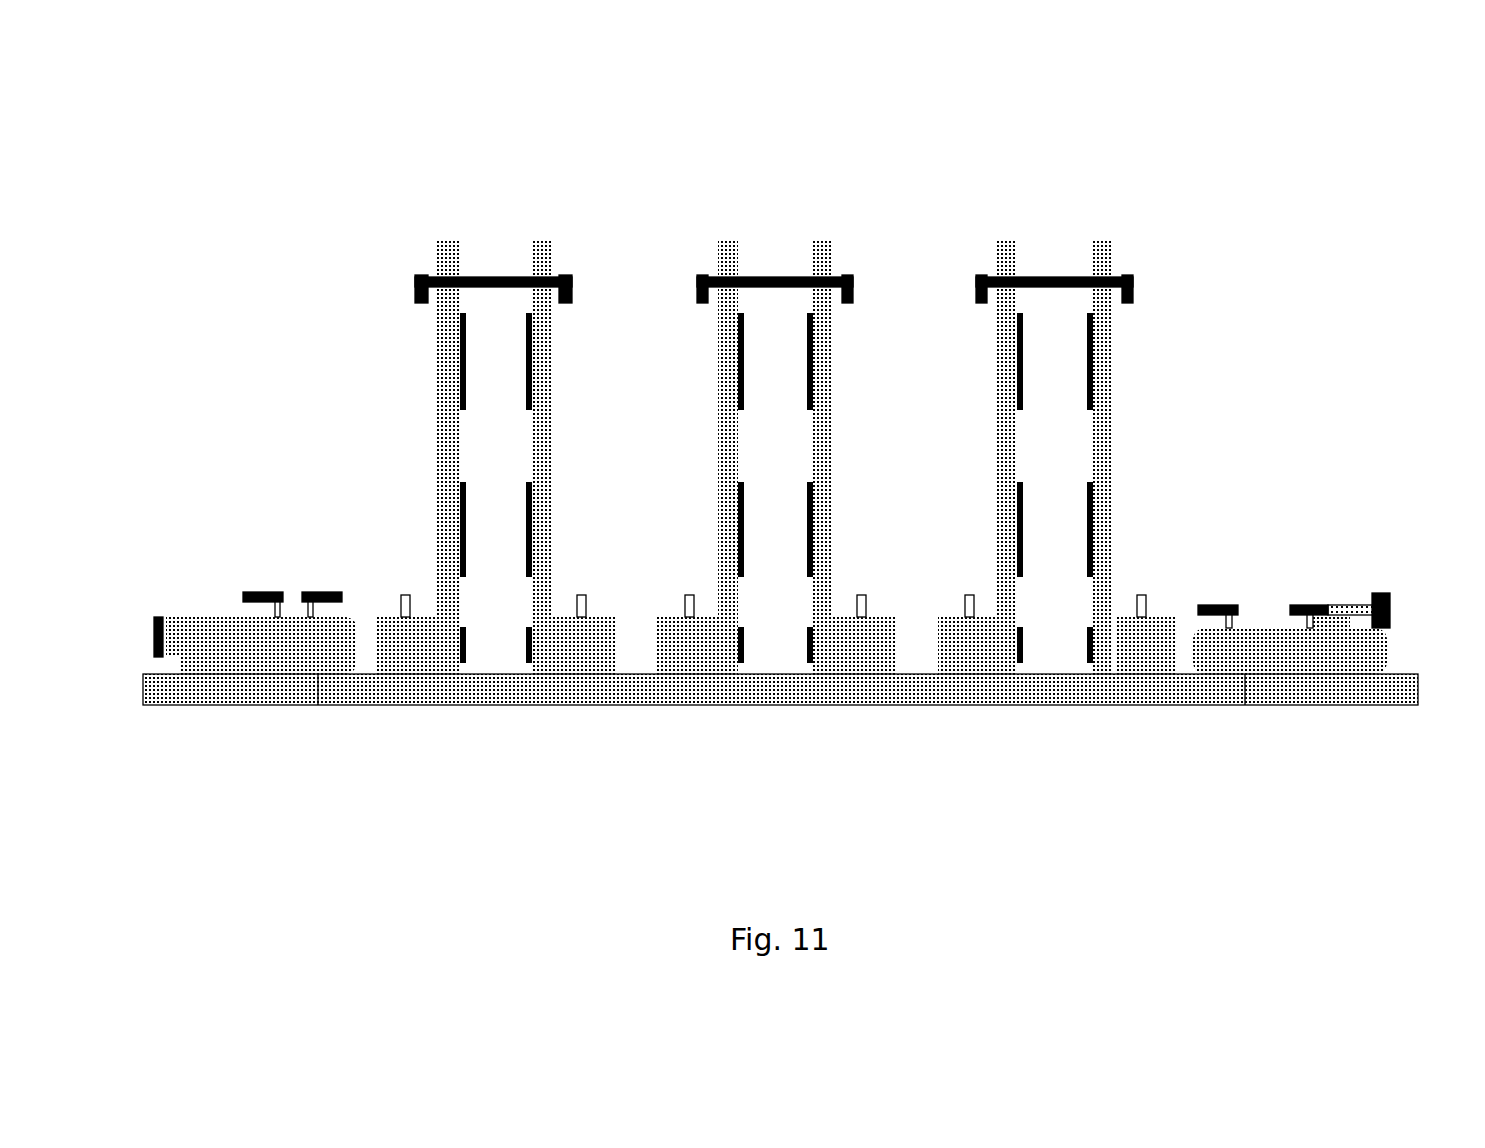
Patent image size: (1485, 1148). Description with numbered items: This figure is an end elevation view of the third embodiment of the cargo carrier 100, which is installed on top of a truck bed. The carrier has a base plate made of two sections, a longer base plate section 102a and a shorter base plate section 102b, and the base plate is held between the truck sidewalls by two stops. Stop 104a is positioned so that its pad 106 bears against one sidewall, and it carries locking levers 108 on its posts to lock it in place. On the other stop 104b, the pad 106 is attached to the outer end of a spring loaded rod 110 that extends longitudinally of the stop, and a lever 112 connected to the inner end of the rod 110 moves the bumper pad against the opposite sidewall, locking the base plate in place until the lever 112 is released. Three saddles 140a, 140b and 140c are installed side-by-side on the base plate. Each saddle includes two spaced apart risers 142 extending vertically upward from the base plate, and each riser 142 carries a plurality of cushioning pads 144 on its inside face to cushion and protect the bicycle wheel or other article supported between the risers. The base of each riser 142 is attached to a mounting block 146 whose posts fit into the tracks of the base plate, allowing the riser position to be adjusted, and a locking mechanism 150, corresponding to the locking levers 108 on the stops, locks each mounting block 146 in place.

The cargo carrier 100 is at (325, 243).
The base plate section 102a is at (270, 648).
The base plate section 102b is at (432, 695).
The stop 104a is at (221, 625).
The stop 104b is at (1258, 628).
The pad 106 is at (157, 617).
The locking lever 108 is at (328, 592).
The spring loaded rod 110 is at (1353, 605).
The lever 112 is at (1307, 618).
The saddle 140a is at (487, 194).
The saddle 140b is at (768, 206).
The saddle 140c is at (1055, 200).
The riser 142 is at (436, 388).
The cushioning pad 144 is at (810, 372).
The mounting block 146 is at (400, 643).
The locking mechanism 150 is at (404, 594).